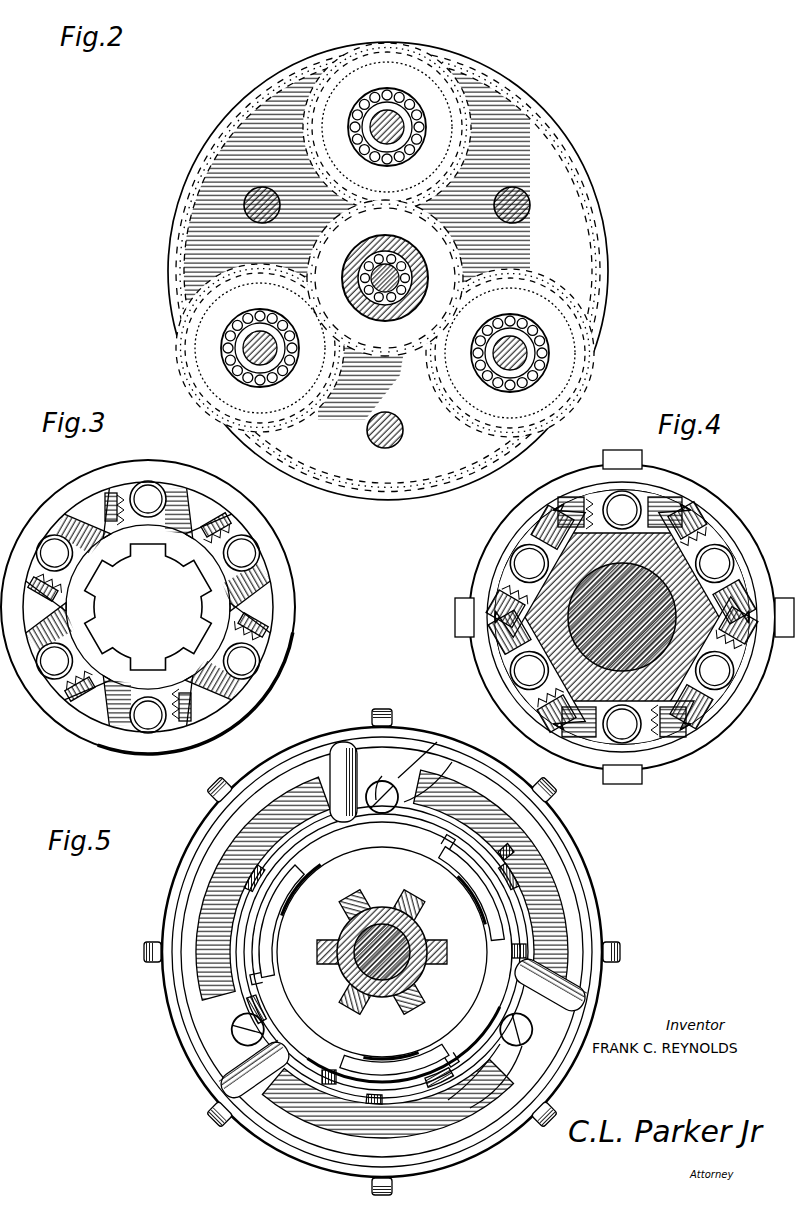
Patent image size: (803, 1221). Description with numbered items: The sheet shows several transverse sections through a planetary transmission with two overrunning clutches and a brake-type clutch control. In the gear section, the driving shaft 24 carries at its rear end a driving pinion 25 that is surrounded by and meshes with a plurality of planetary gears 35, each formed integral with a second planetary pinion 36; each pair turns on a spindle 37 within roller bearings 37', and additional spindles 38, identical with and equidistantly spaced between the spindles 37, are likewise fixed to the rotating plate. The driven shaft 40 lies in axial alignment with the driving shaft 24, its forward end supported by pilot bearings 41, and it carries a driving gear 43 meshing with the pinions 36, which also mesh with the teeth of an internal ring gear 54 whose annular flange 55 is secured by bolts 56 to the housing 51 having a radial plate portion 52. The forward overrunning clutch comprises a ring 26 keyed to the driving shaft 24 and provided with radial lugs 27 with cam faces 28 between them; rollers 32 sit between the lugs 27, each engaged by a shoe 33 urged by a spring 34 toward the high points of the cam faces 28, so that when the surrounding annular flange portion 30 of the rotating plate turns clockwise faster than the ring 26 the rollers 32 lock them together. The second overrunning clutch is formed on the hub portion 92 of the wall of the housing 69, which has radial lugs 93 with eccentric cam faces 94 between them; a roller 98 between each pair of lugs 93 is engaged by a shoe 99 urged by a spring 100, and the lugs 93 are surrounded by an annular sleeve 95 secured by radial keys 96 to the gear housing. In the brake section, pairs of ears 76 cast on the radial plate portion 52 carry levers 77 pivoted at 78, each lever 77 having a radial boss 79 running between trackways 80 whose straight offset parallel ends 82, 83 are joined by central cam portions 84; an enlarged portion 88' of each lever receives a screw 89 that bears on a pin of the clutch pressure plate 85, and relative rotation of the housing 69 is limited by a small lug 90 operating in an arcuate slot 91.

In FIG. 2, the driving shaft 24 is at (350, 300).
In FIG. 2, the driving pinion 25 is at (392, 340).
In FIG. 3, the ring 26 is at (148, 598).
In FIG. 3, the radial lugs 27 is at (91, 503).
In FIG. 3, the cam faces 28 is at (80, 550).
In FIG. 3, the annular flange portion 30 is at (294, 628).
In FIG. 3, the rollers 32 is at (150, 489).
In FIG. 3, the shoe 33 is at (124, 490).
In FIG. 3, the spring 34 is at (107, 496).
In FIG. 2, the planetary gears 35 is at (395, 44).
In FIG. 2, the second planetary gear or pinion 36 is at (458, 72).
In FIG. 2, the spindle or stub shaft 37 is at (385, 240).
In FIG. 2, the roller bearings 37' is at (385, 240).
In FIG. 2, the additional spindles 38 is at (272, 220).
In FIG. 4, the driven shaft 40 is at (588, 582).
In FIG. 5, the driven shaft 40 is at (381, 928).
In FIG. 2, the pilot bearings 41 is at (394, 252).
In FIG. 2, the driving gear 43 is at (462, 259).
In FIG. 5, the housing 51 is at (572, 882).
In FIG. 5, the radial plate portion 52 is at (560, 867).
In FIG. 2, the internal ring gear 54 is at (441, 472).
In FIG. 5, the annular flange 55 is at (202, 840).
In FIG. 5, the bolts 56 is at (555, 794).
In FIG. 5, the housing 69 is at (497, 944).
In FIG. 5, the ears 76 is at (330, 758).
In FIG. 5, the lever 77 is at (226, 930).
In FIG. 5, the pivot 78 is at (220, 1090).
In FIG. 5, the boss 79 is at (253, 880).
In FIG. 5, the trackways 80 is at (282, 851).
In FIG. 5, the straight offset parallel end 82 is at (526, 951).
In FIG. 5, the straight offset parallel end 83 is at (398, 1100).
In FIG. 5, the central cam portions 84 is at (518, 911).
In FIG. 5, the clutch pressure plate 85 is at (503, 856).
In FIG. 5, the enlarged portion 88' is at (382, 916).
In FIG. 5, the screw 89 is at (412, 768).
In FIG. 5, the lug 90 is at (440, 854).
In FIG. 5, the arcuate slot 91 is at (288, 900).
In FIG. 4, the hub portion 92 is at (590, 742).
In FIG. 5, the hub portion 92 is at (418, 937).
In FIG. 4, the radial lugs 93 is at (563, 508).
In FIG. 5, the radial lugs 93 is at (424, 892).
In FIG. 4, the eccentric cam faces 94 is at (500, 645).
In FIG. 4, the annular sleeve 95 is at (697, 494).
In FIG. 4, the radial keys 96 is at (621, 450).
In FIG. 4, the roller 98 is at (524, 553).
In FIG. 4, the shoe 99 is at (500, 568).
In FIG. 4, the spring 100 is at (496, 594).